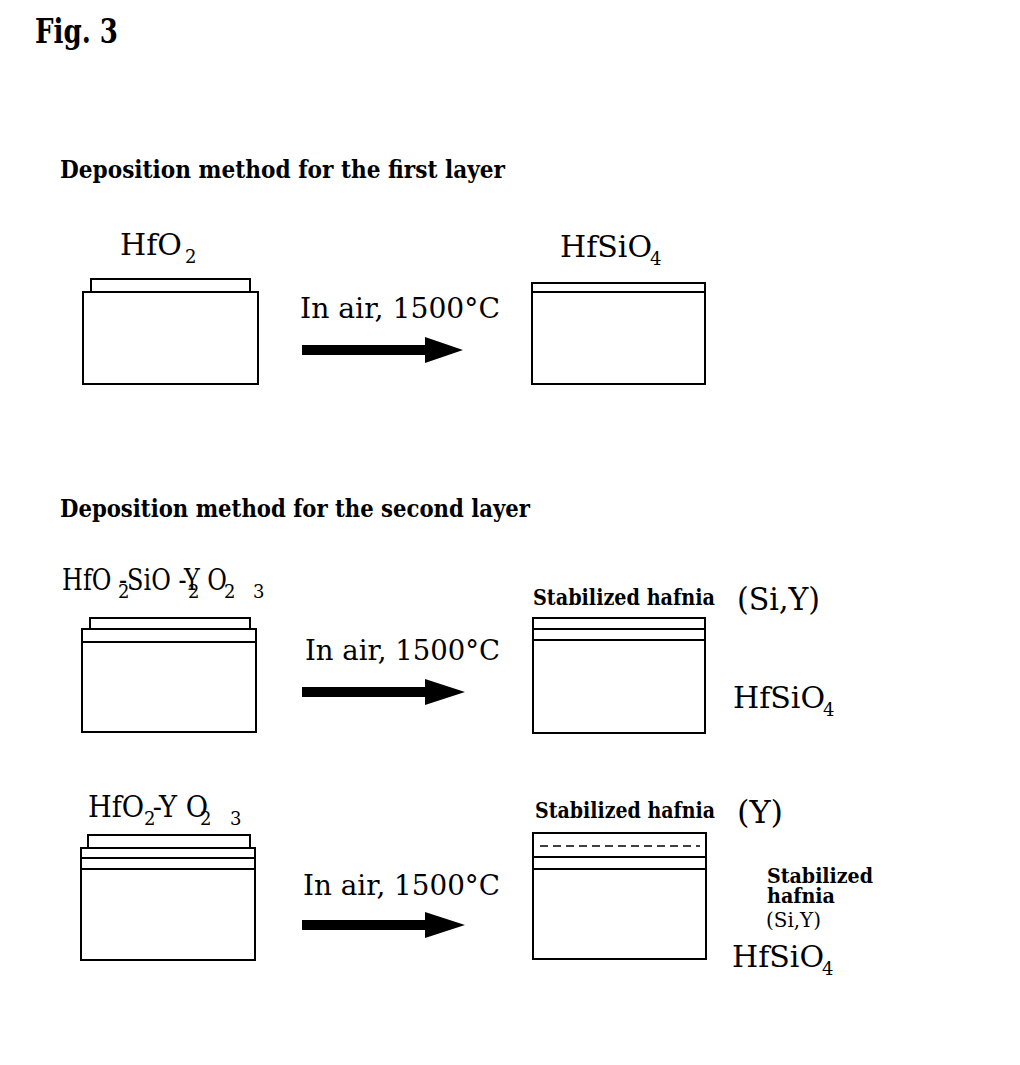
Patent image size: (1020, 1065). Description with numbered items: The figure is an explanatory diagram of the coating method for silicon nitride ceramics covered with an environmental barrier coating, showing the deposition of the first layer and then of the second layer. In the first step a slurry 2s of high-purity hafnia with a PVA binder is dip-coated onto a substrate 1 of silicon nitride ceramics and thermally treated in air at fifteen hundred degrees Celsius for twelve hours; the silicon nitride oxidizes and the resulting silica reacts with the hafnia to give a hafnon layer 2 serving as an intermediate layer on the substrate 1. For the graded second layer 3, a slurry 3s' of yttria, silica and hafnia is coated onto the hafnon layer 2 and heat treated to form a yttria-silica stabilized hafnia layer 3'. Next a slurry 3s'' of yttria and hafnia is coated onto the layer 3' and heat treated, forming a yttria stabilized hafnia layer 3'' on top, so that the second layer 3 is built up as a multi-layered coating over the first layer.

The substrate 1 is at (243, 372).
The slurry 2s is at (240, 284).
The hafnon layer 2 is at (700, 288).
The slurry 3s' is at (221, 607).
The yttria-silica stabilized hafnia layer 3' is at (441, 738).
The slurry 3s'' is at (202, 826).
The yttria stabilized hafnia layer 3'' is at (578, 826).
The graded second layer 3 is at (645, 844).